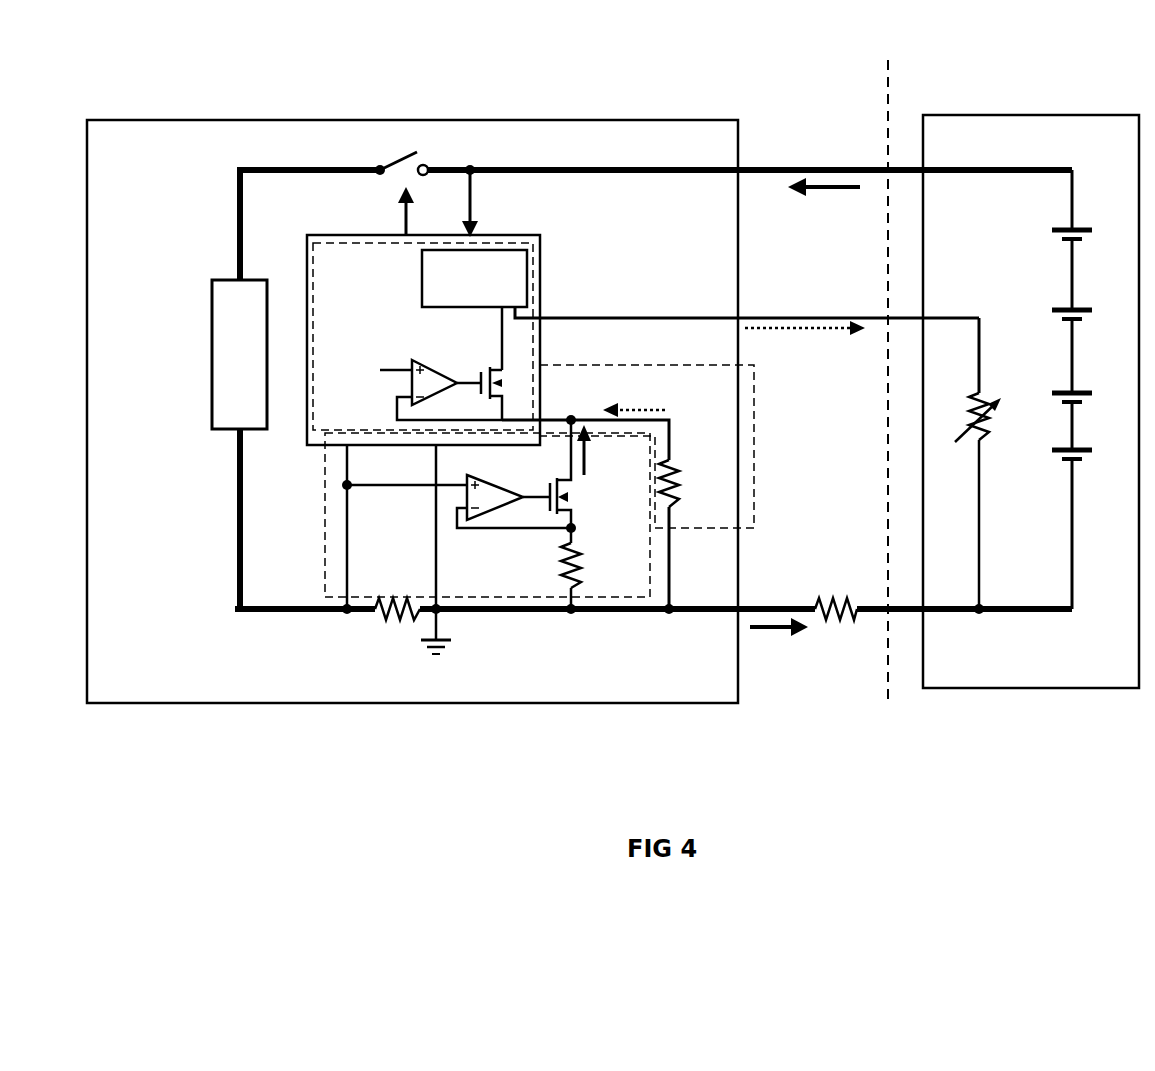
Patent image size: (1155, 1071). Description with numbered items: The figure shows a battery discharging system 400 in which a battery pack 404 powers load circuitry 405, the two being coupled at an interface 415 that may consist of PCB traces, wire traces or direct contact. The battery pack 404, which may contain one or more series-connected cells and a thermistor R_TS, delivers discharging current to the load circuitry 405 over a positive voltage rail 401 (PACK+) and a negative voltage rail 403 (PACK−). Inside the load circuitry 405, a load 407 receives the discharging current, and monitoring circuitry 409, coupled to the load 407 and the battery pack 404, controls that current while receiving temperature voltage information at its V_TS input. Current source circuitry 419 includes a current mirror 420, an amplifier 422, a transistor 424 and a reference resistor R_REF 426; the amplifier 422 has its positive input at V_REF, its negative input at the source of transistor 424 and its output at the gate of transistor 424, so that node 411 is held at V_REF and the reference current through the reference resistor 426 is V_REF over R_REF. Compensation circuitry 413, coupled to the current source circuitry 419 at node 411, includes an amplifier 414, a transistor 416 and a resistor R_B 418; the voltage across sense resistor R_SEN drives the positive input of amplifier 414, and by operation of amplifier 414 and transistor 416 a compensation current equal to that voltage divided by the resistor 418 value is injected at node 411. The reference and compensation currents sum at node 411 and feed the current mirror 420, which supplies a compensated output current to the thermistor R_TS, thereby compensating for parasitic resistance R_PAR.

The battery discharging system 400 is at (218, 55).
The voltage rail (PACK+) 401 is at (868, 170).
The negative voltage rail (PACK−) 403 is at (870, 609).
The battery pack 404 is at (1052, 117).
The load circuitry 405 is at (347, 120).
The load 407 is at (212, 385).
The monitoring circuitry 409 is at (372, 236).
The node 411 is at (571, 402).
The compensation circuitry 413 is at (325, 533).
The amplifier 414 is at (497, 477).
The interface 415 is at (890, 100).
The transistor 416 is at (585, 509).
The resistor RB 418 is at (585, 566).
The current source circuitry 419 is at (752, 465).
The current mirror 420 is at (489, 250).
The amplifier 422 is at (384, 392).
The transistor 424 is at (476, 374).
The reference resistor RREF 426 is at (690, 477).